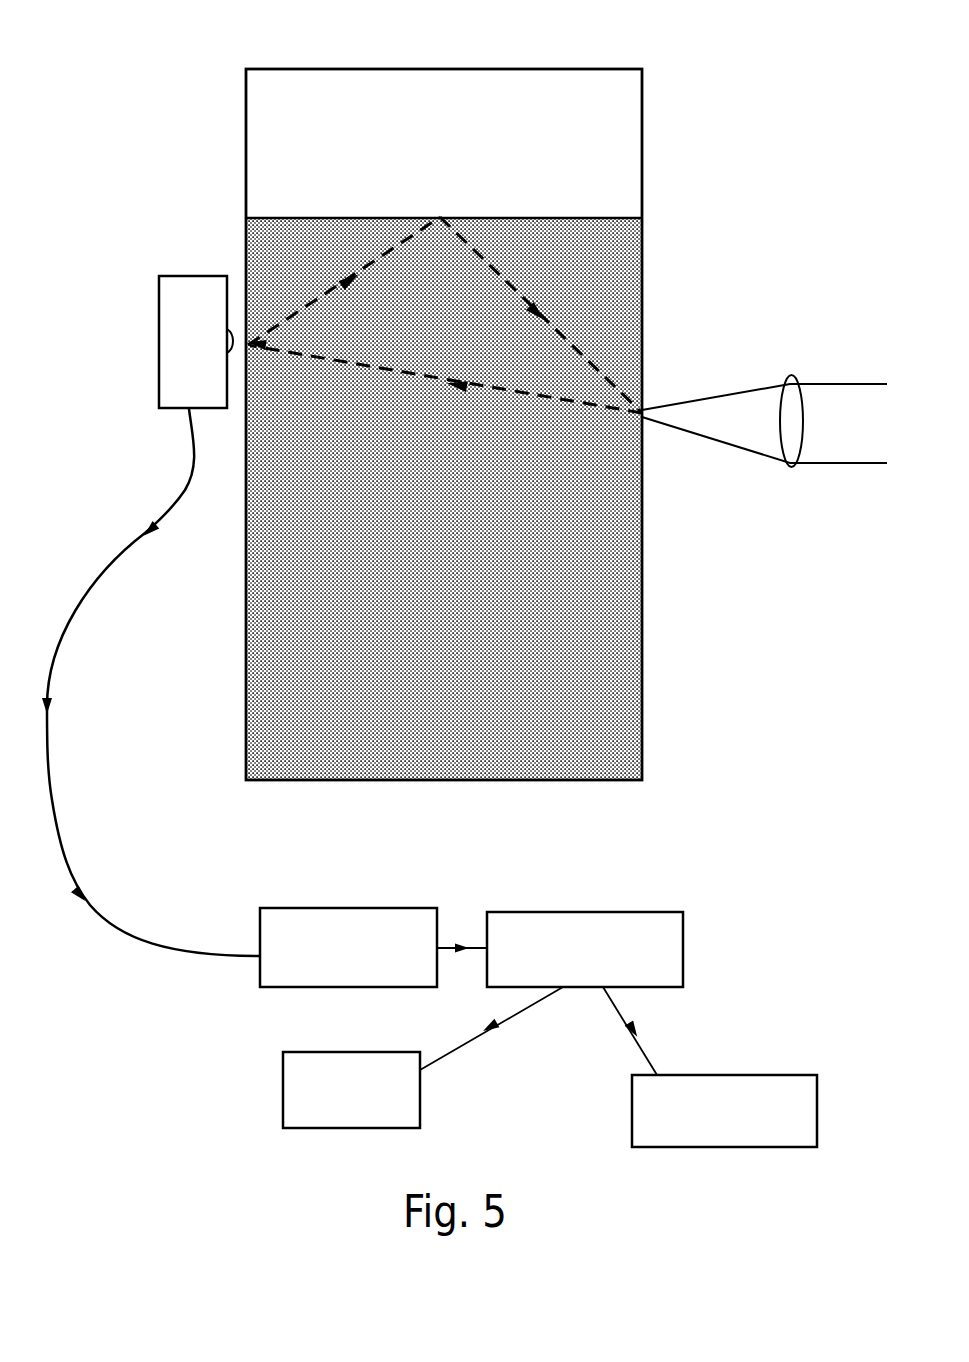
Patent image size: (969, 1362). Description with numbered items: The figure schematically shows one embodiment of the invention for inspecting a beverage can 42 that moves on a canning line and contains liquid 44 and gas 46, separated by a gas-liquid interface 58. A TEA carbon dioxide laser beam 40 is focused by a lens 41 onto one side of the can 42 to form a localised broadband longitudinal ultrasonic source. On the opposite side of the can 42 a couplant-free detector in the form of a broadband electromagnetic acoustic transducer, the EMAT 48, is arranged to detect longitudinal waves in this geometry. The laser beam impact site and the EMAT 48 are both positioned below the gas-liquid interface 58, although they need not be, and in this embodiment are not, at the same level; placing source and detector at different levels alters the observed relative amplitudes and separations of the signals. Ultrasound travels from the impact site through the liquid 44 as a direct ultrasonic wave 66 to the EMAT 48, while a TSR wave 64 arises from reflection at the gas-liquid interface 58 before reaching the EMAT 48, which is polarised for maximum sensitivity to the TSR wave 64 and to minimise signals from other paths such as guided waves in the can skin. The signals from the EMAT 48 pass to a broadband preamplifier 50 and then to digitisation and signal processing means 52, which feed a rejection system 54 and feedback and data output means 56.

The laser beam 40 is at (895, 440).
The lens 41 is at (790, 465).
The beverage can 42 is at (553, 69).
The liquid 44 is at (467, 620).
The gas 46 is at (457, 150).
The electromagnetic acoustic transducer (EMAT) 48 is at (177, 345).
The preamplifier 50 is at (309, 908).
The digitisation and signal processing means 52 is at (685, 937).
The rejection system 54 is at (283, 1118).
The feedback and data output means 56 is at (735, 1148).
The gas-liquid interface 58 is at (643, 219).
The TSR wave 64 is at (344, 286).
The direct ultrasonic wave 66 is at (450, 388).